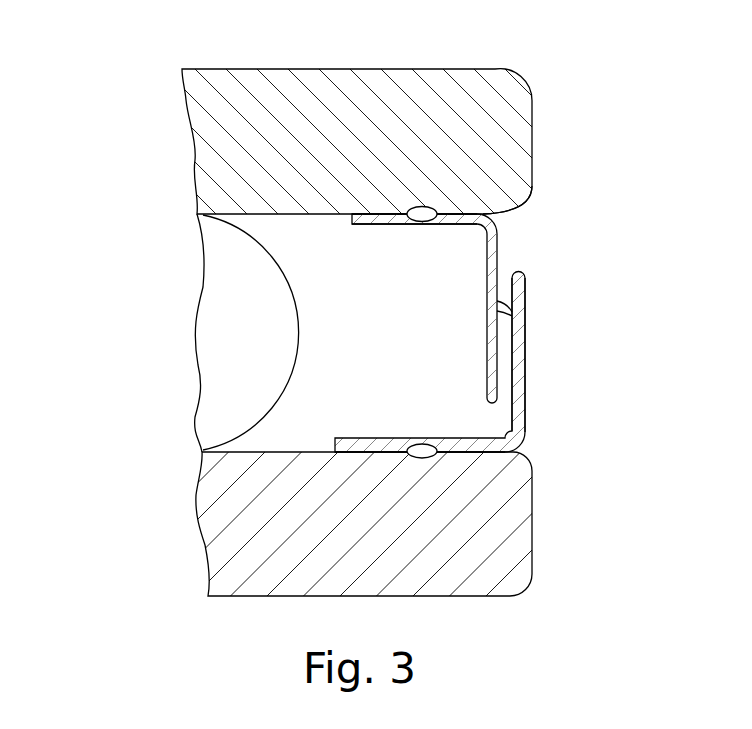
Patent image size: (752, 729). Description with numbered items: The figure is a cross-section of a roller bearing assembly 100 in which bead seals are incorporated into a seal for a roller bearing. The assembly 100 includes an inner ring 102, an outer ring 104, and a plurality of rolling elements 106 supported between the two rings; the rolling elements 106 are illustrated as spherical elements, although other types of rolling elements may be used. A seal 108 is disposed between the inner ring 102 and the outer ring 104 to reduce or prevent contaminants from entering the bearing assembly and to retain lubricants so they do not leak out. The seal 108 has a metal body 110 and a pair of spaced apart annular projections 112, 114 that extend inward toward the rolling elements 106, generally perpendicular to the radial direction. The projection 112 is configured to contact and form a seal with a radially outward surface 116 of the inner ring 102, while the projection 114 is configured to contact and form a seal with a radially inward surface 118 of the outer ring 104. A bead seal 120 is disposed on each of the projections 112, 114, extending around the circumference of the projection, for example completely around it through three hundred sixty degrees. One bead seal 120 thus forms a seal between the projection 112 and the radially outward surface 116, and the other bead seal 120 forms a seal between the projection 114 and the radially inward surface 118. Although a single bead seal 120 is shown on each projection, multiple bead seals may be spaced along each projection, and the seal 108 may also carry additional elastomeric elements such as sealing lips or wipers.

The roller bearing assembly 100 is at (138, 78).
The inner ring 102 is at (508, 560).
The outer ring 104 is at (498, 91).
The rolling elements 106 is at (220, 288).
The seal 108 is at (536, 329).
The metal body 110 is at (492, 260).
The annular projection 112 is at (485, 445).
The annular projection 114 is at (476, 214).
The radially outward surface 116 is at (467, 453).
The radially inward surface 118 is at (460, 213).
The bead seal 120 is at (427, 206).